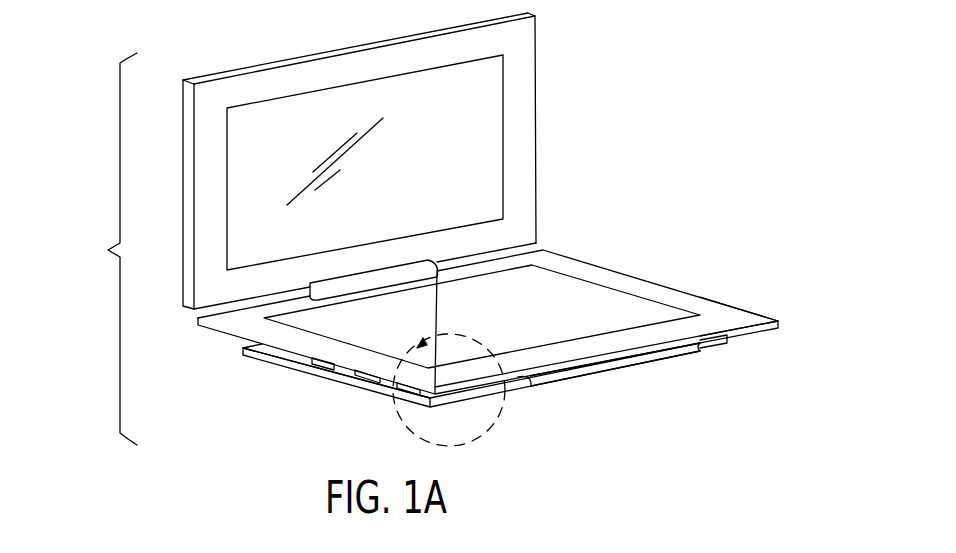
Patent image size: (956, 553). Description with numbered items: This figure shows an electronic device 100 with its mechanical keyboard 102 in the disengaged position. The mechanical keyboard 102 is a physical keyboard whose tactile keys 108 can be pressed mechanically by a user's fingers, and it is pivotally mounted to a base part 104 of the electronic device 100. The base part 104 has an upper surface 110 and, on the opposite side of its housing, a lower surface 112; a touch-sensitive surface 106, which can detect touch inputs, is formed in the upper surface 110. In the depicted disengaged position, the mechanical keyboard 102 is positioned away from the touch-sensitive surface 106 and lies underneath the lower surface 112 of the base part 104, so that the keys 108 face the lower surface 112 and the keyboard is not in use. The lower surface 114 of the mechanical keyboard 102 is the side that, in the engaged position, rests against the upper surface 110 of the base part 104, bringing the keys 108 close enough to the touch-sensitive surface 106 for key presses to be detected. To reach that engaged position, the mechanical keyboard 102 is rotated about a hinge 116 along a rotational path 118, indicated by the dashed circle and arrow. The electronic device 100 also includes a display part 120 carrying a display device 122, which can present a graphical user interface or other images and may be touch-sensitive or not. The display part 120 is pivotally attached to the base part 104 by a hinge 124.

The electronic device 100 is at (100, 249).
The mechanical keyboard 102 is at (253, 356).
The base part 104 is at (653, 281).
The touch-sensitive surface 106 is at (603, 298).
The keys 108 is at (385, 385).
The upper surface 110 is at (735, 315).
The lower surface 112 is at (737, 342).
The lower surface of the mechanical keyboard 114 is at (282, 358).
The hinge 116 is at (600, 362).
The rotational path 118 is at (498, 418).
The display part 120 is at (537, 51).
The display device 122 is at (503, 112).
The hinge 124 is at (413, 268).